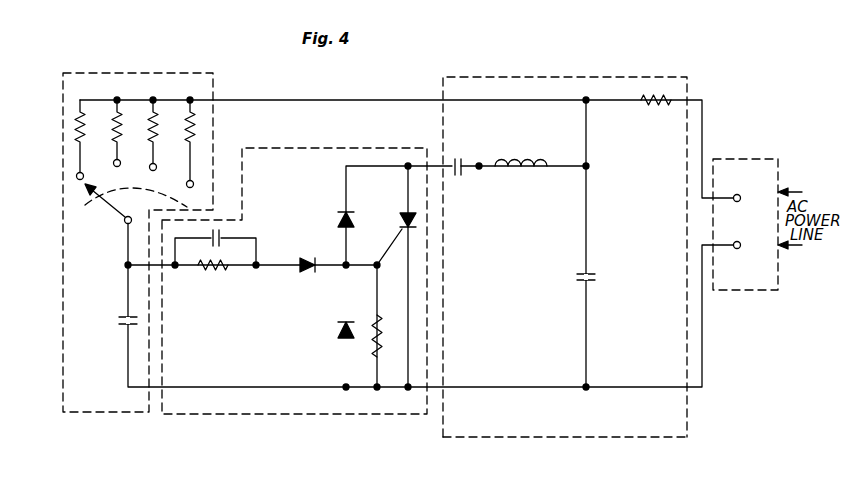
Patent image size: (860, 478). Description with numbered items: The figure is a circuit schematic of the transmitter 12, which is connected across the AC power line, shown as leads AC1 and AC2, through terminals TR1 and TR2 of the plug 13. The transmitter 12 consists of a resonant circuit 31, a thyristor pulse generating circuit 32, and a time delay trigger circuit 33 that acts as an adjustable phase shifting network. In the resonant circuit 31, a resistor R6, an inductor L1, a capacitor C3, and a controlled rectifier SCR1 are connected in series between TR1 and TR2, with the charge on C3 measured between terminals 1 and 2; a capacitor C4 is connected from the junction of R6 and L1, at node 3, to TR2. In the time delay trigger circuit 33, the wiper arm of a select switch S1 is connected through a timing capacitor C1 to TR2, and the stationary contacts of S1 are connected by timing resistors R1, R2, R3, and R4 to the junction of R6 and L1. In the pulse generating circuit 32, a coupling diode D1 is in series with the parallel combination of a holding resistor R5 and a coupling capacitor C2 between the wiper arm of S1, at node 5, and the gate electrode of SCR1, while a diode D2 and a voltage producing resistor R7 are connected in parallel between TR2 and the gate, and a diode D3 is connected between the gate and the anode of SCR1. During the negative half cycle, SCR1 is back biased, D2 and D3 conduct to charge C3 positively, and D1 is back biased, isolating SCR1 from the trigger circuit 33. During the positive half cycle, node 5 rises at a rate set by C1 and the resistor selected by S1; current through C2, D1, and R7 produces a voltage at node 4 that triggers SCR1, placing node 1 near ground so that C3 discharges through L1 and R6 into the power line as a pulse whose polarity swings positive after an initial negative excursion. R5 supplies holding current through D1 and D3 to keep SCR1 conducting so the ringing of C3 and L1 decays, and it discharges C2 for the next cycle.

The timing resistor R1 is at (75, 129).
The timing resistor R2 is at (111, 121).
The timing resistor R3 is at (147, 122).
The timing resistor R4 is at (181, 122).
The select switch S1 is at (107, 210).
The node 5 is at (124, 268).
The timing capacitor C1 is at (125, 328).
The time delay trigger circuit 33 is at (92, 413).
The thyristor pulse generating circuit 32 is at (337, 414).
The holding resistor R5 is at (214, 271).
The coupling capacitor C2 is at (228, 233).
The coupling diode D1 is at (309, 275).
The node 4 is at (350, 264).
The diode D3 is at (338, 218).
The controlled rectifier SCR1 is at (417, 223).
The diode D2 is at (339, 332).
The voltage producing resistor R7 is at (388, 345).
The terminal 1 is at (409, 158).
The capacitor C3 is at (458, 152).
The terminal 2 is at (481, 162).
The inductor L1 is at (521, 160).
The circuit node 3 is at (590, 168).
The capacitor C4 is at (578, 287).
The resistor R6 is at (670, 86).
The transmitter 12 is at (577, 59).
The resonant circuit 31 is at (688, 423).
The plug 13 is at (735, 160).
The terminal TR1 is at (736, 188).
The terminal TR2 is at (736, 257).
The AC power line lead AC1 is at (797, 182).
The AC power line lead AC2 is at (798, 255).